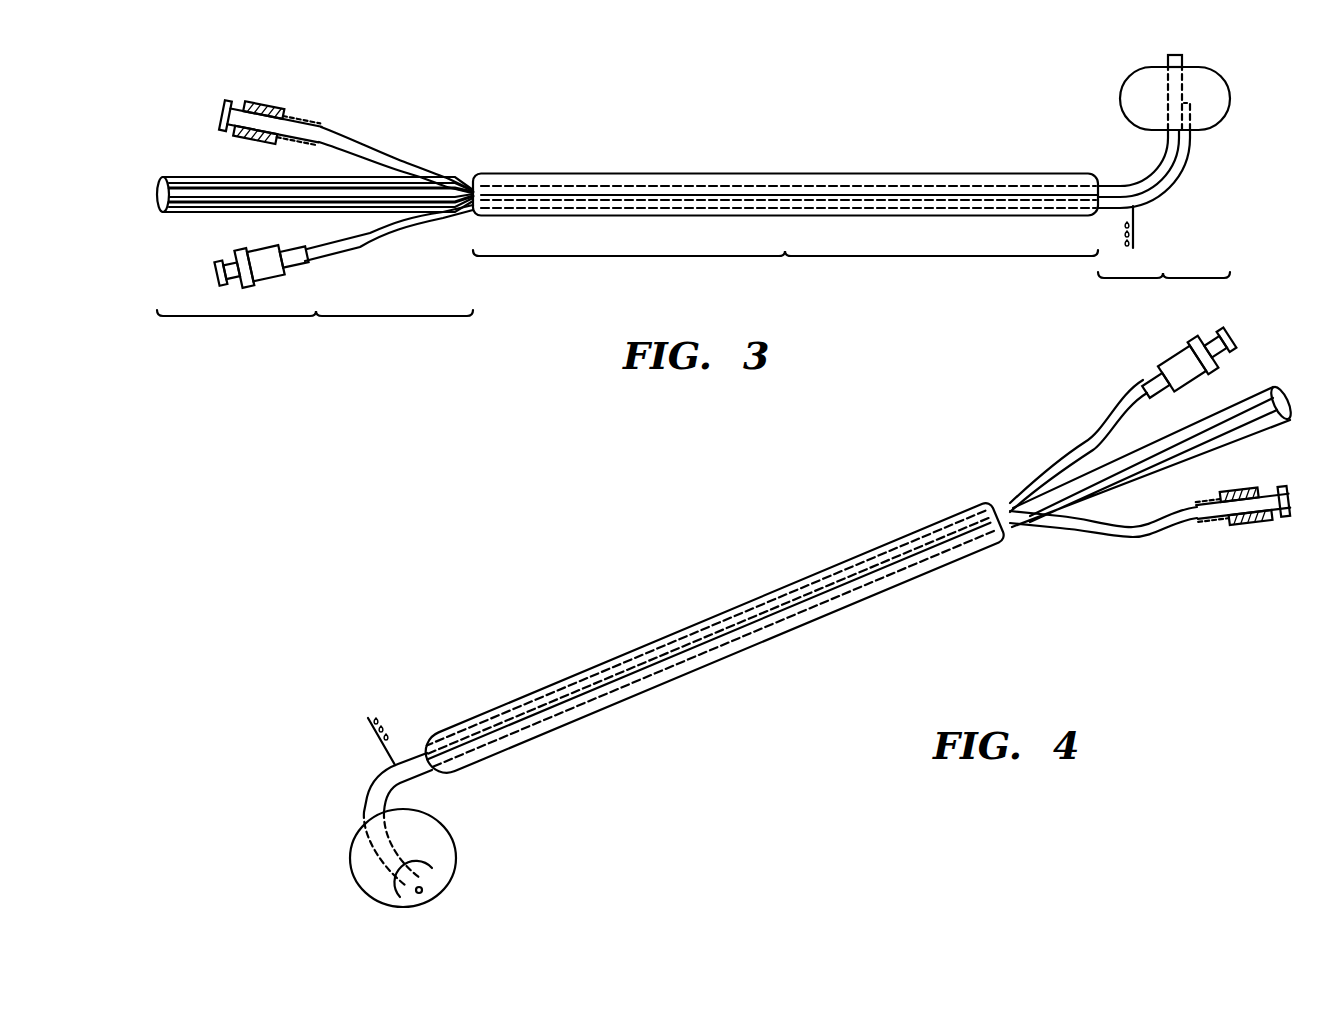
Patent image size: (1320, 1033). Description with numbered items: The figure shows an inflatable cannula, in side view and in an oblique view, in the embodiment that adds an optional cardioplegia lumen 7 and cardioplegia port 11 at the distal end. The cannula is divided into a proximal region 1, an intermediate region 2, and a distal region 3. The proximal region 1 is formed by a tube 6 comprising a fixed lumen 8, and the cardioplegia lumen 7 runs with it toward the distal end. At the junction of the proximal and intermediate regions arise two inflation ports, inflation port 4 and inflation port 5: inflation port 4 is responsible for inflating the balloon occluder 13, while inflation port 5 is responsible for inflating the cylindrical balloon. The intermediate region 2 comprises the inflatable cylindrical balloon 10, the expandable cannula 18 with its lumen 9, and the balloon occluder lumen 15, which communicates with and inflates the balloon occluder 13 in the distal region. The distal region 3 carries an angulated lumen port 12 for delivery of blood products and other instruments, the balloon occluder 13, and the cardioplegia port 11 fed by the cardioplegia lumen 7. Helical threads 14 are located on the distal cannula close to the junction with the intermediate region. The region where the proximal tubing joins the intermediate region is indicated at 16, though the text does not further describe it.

In FIG. 3, the proximal region 1 is at (315, 329).
In FIG. 3, the intermediate region 2 is at (785, 269).
In FIG. 3, the distal region 3 is at (1164, 293).
In FIG. 3, the inflation port 4 is at (216, 274).
In FIG. 4, the inflation port 4 is at (1230, 335).
In FIG. 3, the inflation port 5 is at (268, 104).
In FIG. 4, the inflation port 5 is at (1292, 493).
In FIG. 3, the tube 6 is at (210, 173).
In FIG. 3, the cardioplegia lumen 7 is at (187, 206).
In FIG. 4, the cardioplegia lumen 7 is at (577, 696).
In FIG. 3, the fixed lumen 8 is at (372, 194).
In FIG. 3, the lumen 9 is at (753, 192).
In FIG. 4, the lumen 9 is at (756, 627).
In FIG. 3, the inflatable cylindrical balloon 10 is at (880, 173).
In FIG. 4, the inflatable cylindrical balloon 10 is at (839, 562).
In FIG. 3, the cardioplegia port 11 is at (1200, 166).
In FIG. 4, the cardioplegia port 11 is at (341, 801).
In FIG. 3, the angulated lumen port 12 is at (1172, 55).
In FIG. 4, the angulated lumen port 12 is at (437, 897).
In FIG. 3, the balloon occluder 13 is at (1221, 96).
In FIG. 4, the balloon occluder 13 is at (445, 846).
In FIG. 3, the helical threads 14 is at (1130, 171).
In FIG. 4, the helical threads 14 is at (418, 784).
In FIG. 3, the balloon occluder lumen 15 is at (1172, 188).
In FIG. 4, the balloon occluder lumen 15 is at (375, 776).
In FIG. 3, the proximal junction hub 16 is at (428, 166).
In FIG. 3, the expandable cannula 18 is at (616, 186).
In FIG. 4, the expandable cannula 18 is at (706, 657).